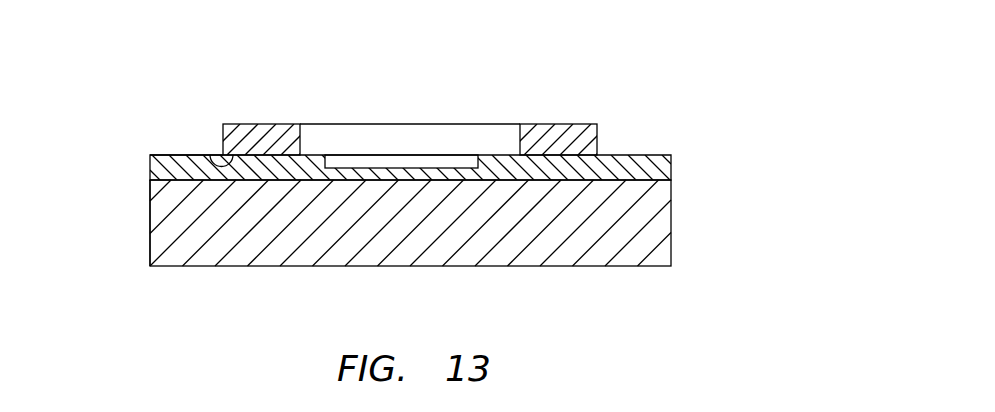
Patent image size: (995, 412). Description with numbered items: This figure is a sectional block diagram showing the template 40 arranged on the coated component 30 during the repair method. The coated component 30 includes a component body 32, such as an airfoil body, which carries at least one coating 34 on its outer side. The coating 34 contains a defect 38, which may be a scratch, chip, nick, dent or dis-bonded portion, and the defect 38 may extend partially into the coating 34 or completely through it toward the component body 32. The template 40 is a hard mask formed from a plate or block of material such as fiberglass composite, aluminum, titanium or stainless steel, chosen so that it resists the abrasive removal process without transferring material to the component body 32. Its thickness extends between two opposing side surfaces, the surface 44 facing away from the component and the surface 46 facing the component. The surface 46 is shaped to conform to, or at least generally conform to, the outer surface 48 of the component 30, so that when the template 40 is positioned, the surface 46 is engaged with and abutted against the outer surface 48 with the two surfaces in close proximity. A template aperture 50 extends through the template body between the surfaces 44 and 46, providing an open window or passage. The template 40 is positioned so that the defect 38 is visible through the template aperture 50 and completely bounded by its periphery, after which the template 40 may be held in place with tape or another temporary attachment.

The coated component 30 is at (141, 258).
The component body 32 is at (658, 229).
The coating 34 is at (672, 167).
The defect 38 is at (458, 148).
The template 40 is at (593, 115).
The side surface of template body 44 is at (255, 124).
The side surface of template body 46 is at (210, 155).
The outer surface of component 48 is at (166, 156).
The template aperture 50 is at (316, 131).